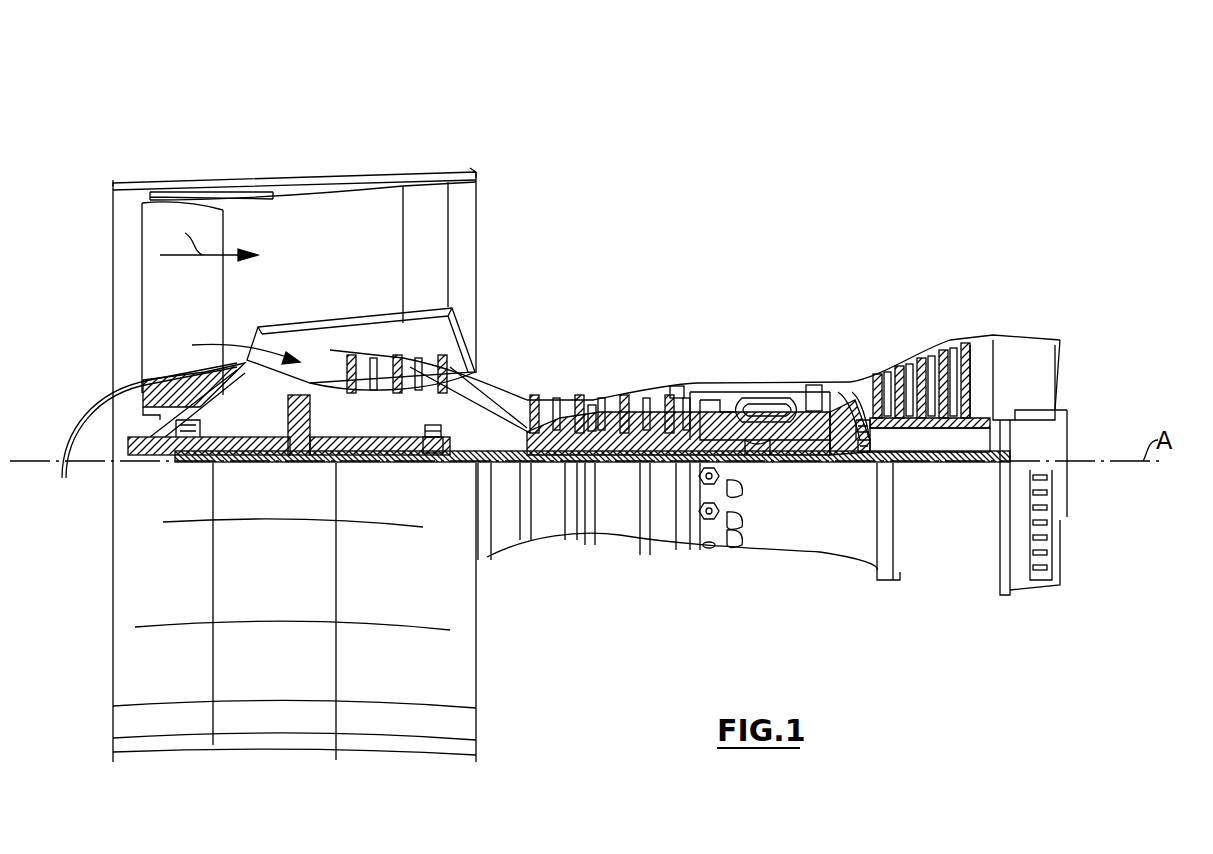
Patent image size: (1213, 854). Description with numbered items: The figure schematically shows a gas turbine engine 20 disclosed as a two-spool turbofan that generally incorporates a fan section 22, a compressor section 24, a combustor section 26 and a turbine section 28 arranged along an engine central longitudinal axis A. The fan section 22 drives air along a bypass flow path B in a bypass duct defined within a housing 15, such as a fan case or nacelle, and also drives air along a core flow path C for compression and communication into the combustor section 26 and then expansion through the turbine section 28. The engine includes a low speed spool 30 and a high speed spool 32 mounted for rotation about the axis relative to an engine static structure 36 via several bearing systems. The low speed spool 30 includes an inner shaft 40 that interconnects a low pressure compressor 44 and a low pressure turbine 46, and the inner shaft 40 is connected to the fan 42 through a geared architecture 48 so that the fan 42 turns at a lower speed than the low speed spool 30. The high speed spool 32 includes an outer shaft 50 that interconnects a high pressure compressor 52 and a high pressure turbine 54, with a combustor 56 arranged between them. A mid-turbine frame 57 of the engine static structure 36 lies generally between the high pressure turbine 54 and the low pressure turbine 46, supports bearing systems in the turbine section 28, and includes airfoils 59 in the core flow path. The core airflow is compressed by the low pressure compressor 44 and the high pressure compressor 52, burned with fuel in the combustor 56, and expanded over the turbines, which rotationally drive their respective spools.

The housing 15 is at (296, 183).
The gas turbine engine 20 is at (760, 224).
The fan section 22 is at (223, 168).
The compressor section 24 is at (529, 370).
The combustor section 26 is at (748, 352).
The turbine section 28 is at (896, 322).
The low speed spool 30 is at (633, 478).
The high speed spool 32 is at (677, 398).
The engine static structure 36 is at (672, 562).
The inner shaft 40 is at (494, 475).
The fan 42 is at (198, 309).
The low pressure compressor 44 is at (402, 368).
The low pressure turbine 46 is at (941, 355).
The geared architecture 48 is at (300, 450).
The outer shaft 50 is at (757, 455).
The high pressure compressor 52 is at (592, 405).
The high pressure turbine 54 is at (814, 385).
The combustor 56 is at (745, 406).
The mid-turbine frame 57 is at (858, 374).
The airfoils 59 is at (862, 442).